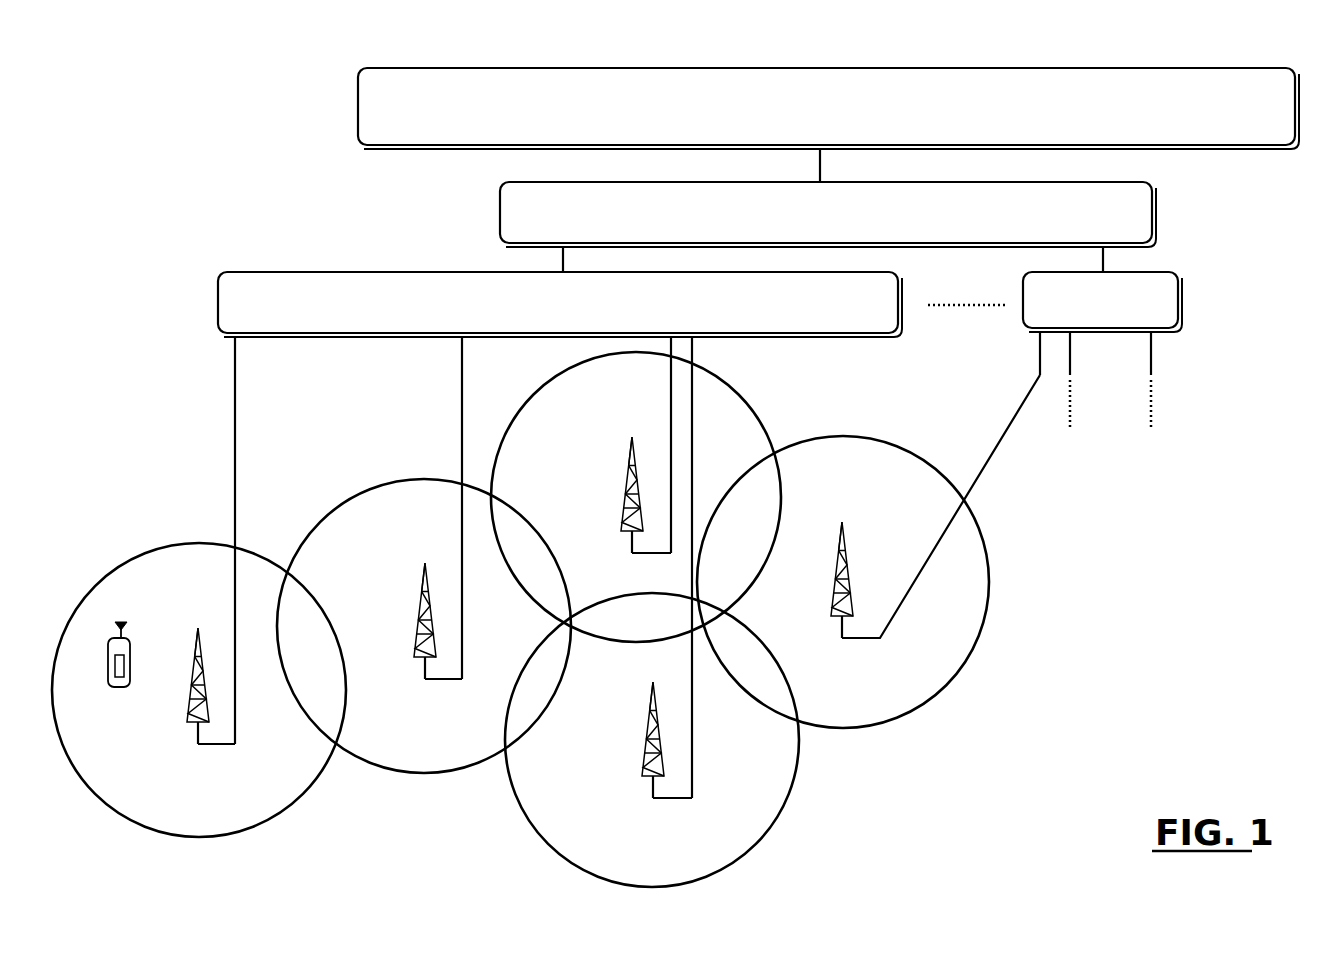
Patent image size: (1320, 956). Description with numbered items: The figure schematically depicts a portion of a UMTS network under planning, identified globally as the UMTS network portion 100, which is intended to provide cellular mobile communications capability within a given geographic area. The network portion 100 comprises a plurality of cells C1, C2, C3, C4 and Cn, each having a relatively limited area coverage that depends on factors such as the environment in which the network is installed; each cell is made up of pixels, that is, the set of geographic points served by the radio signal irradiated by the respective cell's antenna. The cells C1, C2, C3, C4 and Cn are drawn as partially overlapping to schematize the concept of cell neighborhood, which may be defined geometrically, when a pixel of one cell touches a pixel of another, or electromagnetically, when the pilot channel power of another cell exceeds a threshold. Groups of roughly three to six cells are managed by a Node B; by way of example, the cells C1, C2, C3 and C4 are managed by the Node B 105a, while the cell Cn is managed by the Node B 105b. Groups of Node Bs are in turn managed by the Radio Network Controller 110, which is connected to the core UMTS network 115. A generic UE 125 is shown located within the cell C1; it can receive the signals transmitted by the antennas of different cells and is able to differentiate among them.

The UMTS network portion 100 is at (154, 127).
The core UMTS network 115 is at (737, 138).
The Radio Network Controller (RNC) 110 is at (1007, 221).
The Node B 105a is at (722, 315).
The Node B 105b is at (1185, 328).
The UE 125 is at (107, 645).
The cell C1 is at (303, 785).
The cell C2 is at (378, 490).
The cell C3 is at (787, 777).
The cell C4 is at (757, 418).
The cell Cn is at (977, 650).